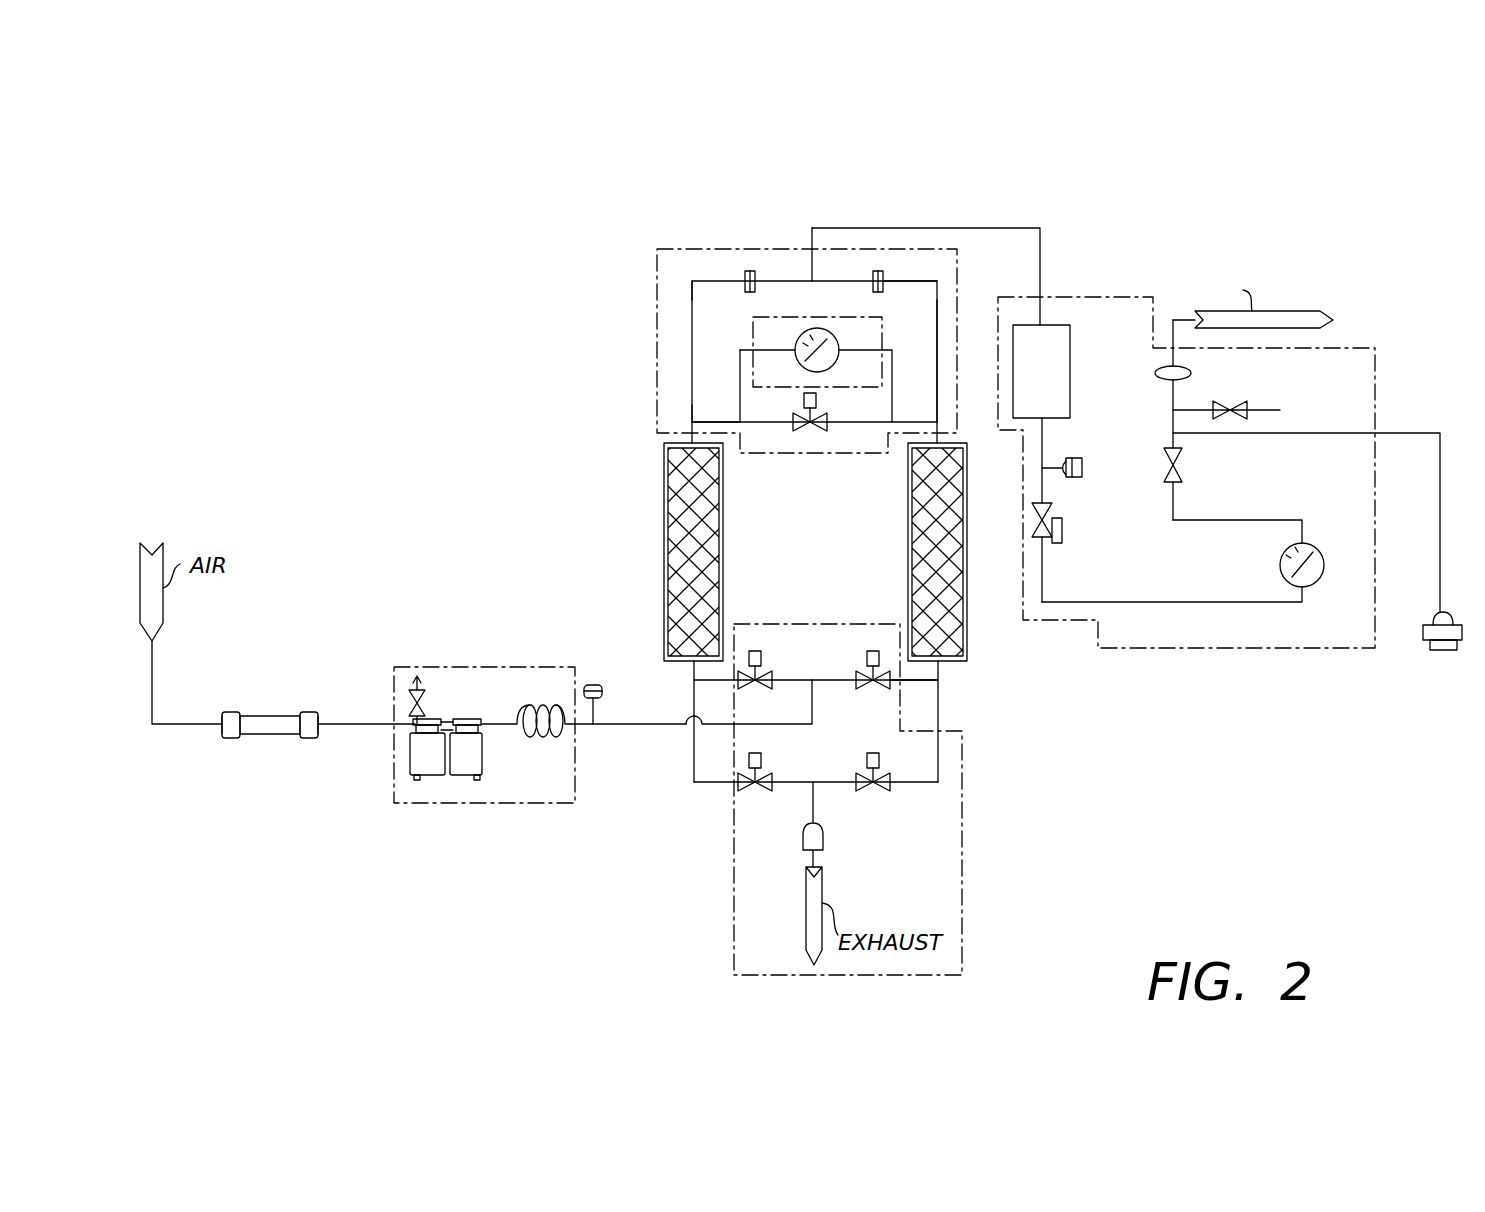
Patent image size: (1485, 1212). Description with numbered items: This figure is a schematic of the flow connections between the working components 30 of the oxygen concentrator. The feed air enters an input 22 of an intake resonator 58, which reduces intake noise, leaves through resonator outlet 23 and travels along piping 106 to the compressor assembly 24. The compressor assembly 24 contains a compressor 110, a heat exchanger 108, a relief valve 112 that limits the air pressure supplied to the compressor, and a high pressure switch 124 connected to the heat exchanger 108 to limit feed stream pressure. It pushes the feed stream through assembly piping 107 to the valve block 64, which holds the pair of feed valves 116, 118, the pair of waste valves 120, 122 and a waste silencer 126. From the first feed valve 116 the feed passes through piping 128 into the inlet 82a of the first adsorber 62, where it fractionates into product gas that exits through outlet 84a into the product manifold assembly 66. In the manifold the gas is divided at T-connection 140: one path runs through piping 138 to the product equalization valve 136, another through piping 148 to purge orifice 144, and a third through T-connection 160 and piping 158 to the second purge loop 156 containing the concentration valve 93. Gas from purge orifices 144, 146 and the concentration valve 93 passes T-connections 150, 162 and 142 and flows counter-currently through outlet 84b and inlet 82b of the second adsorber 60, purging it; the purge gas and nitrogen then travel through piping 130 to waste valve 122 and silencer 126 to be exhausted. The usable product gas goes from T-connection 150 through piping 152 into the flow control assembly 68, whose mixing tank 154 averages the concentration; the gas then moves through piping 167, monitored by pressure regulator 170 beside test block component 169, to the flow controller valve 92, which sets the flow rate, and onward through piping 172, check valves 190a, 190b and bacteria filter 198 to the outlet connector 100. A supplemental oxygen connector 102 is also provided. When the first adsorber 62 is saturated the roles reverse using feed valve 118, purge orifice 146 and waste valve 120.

The input 22 is at (221, 738).
The resonator outlet 23 is at (320, 738).
The compressor assembly 24 is at (498, 805).
The assembly of working components 30 is at (573, 268).
The intake resonator 58 is at (277, 712).
The second adsorber 60 is at (975, 640).
The first adsorber 62 is at (664, 572).
The valve block 64 is at (966, 850).
The product manifold assembly 66 is at (695, 249).
The flow control assembly 68 is at (1232, 650).
The inlet of first adsorber 82a is at (694, 676).
The inlet of second adsorber 82b is at (940, 665).
The outlet of first adsorber 84a is at (668, 442).
The outlet of second adsorber 84b is at (945, 443).
The flow controller valve 92 is at (1313, 583).
The concentration valve 93 is at (812, 328).
The outlet connector 100 is at (1327, 317).
The supplemental oxygen connector 102 is at (1457, 650).
The piping 106 is at (372, 723).
The assembly piping 107 is at (623, 725).
The heat exchanger 108 is at (538, 705).
The compressor 110 is at (483, 773).
The relief valve 112 is at (412, 690).
The first feed valve 116 is at (755, 650).
The feed valve 118 is at (873, 650).
The waste valve 120 is at (767, 767).
The waste valve 122 is at (862, 792).
The high pressure switch 124 is at (596, 684).
The waste silencer 126 is at (823, 843).
The piping 128 is at (690, 684).
The piping 130 is at (943, 674).
The product equalization valve 136 is at (815, 430).
The piping 138 is at (693, 405).
The T-connection 140 is at (690, 432).
The T-connection 142 is at (955, 395).
The purge orifice 144 is at (750, 270).
The purge orifice 146 is at (878, 271).
The piping 148 is at (692, 281).
The T-connection 150 is at (812, 240).
The piping 152 is at (915, 228).
The mixing tank 154 is at (1070, 325).
The second purge loop 156 is at (888, 298).
The piping 158 is at (740, 420).
The T-connection 160 is at (736, 420).
The T-connection 162 is at (893, 420).
The piping 167 is at (1188, 603).
The test block component 169 is at (1073, 460).
The pressure regulator 170 is at (1060, 545).
The piping 172 is at (1302, 520).
The check valve 190a is at (1182, 470).
The check valve 190b is at (1232, 402).
The bacteria filter 198 is at (1191, 373).